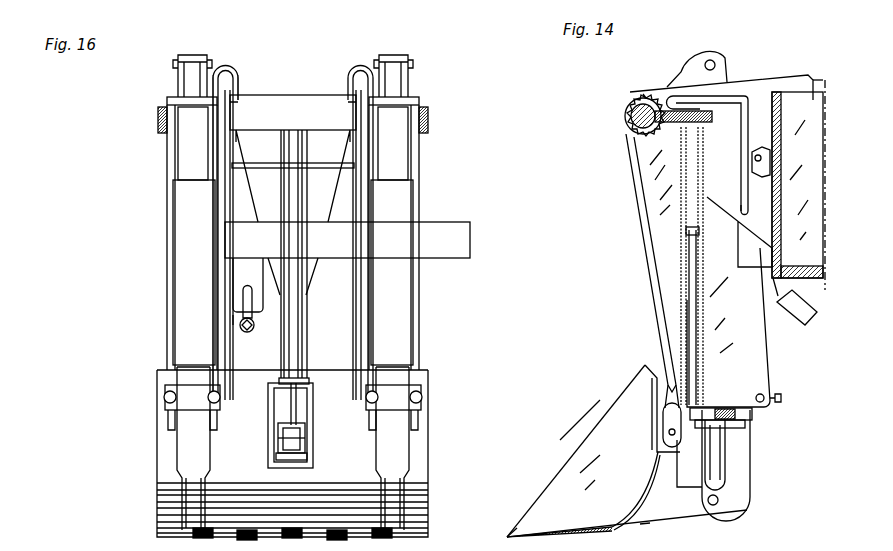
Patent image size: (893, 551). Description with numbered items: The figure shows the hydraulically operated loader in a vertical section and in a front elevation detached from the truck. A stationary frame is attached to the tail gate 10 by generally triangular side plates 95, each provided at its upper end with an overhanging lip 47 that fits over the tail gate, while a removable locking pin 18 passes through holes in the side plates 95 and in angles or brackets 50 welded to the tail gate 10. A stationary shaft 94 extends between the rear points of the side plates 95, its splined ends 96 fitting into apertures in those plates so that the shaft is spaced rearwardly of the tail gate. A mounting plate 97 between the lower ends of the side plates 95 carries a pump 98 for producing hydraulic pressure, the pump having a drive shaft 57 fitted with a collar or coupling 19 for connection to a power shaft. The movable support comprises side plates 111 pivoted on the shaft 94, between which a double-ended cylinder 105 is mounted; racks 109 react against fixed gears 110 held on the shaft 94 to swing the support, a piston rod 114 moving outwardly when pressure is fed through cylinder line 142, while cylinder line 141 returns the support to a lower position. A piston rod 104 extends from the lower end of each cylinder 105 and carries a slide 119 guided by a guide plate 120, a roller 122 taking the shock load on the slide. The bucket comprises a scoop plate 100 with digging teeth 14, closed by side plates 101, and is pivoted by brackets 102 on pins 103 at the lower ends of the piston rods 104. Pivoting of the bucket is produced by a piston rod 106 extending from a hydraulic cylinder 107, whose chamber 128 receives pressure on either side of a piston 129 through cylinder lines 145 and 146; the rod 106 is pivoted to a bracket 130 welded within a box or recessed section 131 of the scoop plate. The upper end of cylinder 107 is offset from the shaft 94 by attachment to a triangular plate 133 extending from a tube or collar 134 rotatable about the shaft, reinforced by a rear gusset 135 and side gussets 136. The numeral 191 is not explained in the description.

In FIG. 14, the tail gate 10 is at (781, 118).
In FIG. 14, the digging teeth 14 is at (516, 527).
In FIG. 16, the locking pin 18 is at (316, 165).
In FIG. 14, the locking pin 18 is at (761, 158).
In FIG. 14, the collar or coupling 19 is at (807, 325).
In FIG. 16, the overhanging lip 47 is at (228, 102).
In FIG. 14, the overhanging lip 47 is at (814, 80).
In FIG. 14, the angles or brackets 50 is at (760, 147).
In FIG. 16, the input or drive shaft 57 is at (255, 318).
In FIG. 14, the input or drive shaft 57 is at (773, 292).
In FIG. 14, the stationary shaft 94 is at (631, 117).
In FIG. 16, the side plates 95 is at (233, 67).
In FIG. 14, the side plates 95 is at (747, 90).
In FIG. 16, the splined ends 96 is at (158, 118).
In FIG. 16, the mounting plate or bracket 97 is at (168, 180).
In FIG. 16, the pump 98 is at (248, 285).
In FIG. 14, the pump 98 is at (757, 252).
In FIG. 14, the scoop plate 100 is at (583, 451).
In FIG. 14, the side plates 101 is at (592, 443).
In FIG. 14, the brackets 102 is at (667, 513).
In FIG. 14, the pins 103 is at (715, 505).
In FIG. 14, the piston rods 104 is at (713, 462).
In FIG. 14, the double-ended cylinder 105 is at (716, 417).
In FIG. 16, the piston rod 106 is at (298, 393).
In FIG. 14, the piston rod 106 is at (672, 383).
In FIG. 16, the hydraulic cylinder 107 is at (290, 329).
In FIG. 14, the hydraulic cylinder 107 is at (666, 323).
In FIG. 14, the racks 109 is at (690, 70).
In FIG. 14, the fixed gears 110 is at (625, 93).
In FIG. 14, the side plates 111 is at (750, 340).
In FIG. 16, the piston rod 114 is at (192, 85).
In FIG. 16, the slide 119 is at (193, 222).
In FIG. 14, the slide 119 is at (743, 448).
In FIG. 16, the guide plate 120 is at (188, 286).
In FIG. 16, the roller 122 is at (188, 397).
In FIG. 14, the roller 122 is at (602, 548).
In FIG. 14, the chamber 128 is at (681, 183).
In FIG. 14, the piston 129 is at (686, 231).
In FIG. 16, the bracket 130 is at (305, 430).
In FIG. 14, the bracket 130 is at (663, 430).
In FIG. 16, the box or recessed section 131 is at (305, 460).
In FIG. 14, the box or recessed section 131 is at (655, 405).
In FIG. 14, the triangular plate 133 is at (672, 122).
In FIG. 16, the tube or collar 134 is at (286, 100).
In FIG. 14, the tube or collar 134 is at (638, 133).
In FIG. 14, the rear gusset or plate 135 is at (650, 157).
In FIG. 16, the side gussets 136 is at (240, 140).
In FIG. 16, the cylinder line 141 is at (230, 67).
In FIG. 16, the cylinder line 142 is at (227, 67).
In FIG. 14, the cylinder line 145 is at (745, 145).
In FIG. 14, the cylinder line 146 is at (745, 186).
In FIG. 16, the pin 191 is at (242, 323).